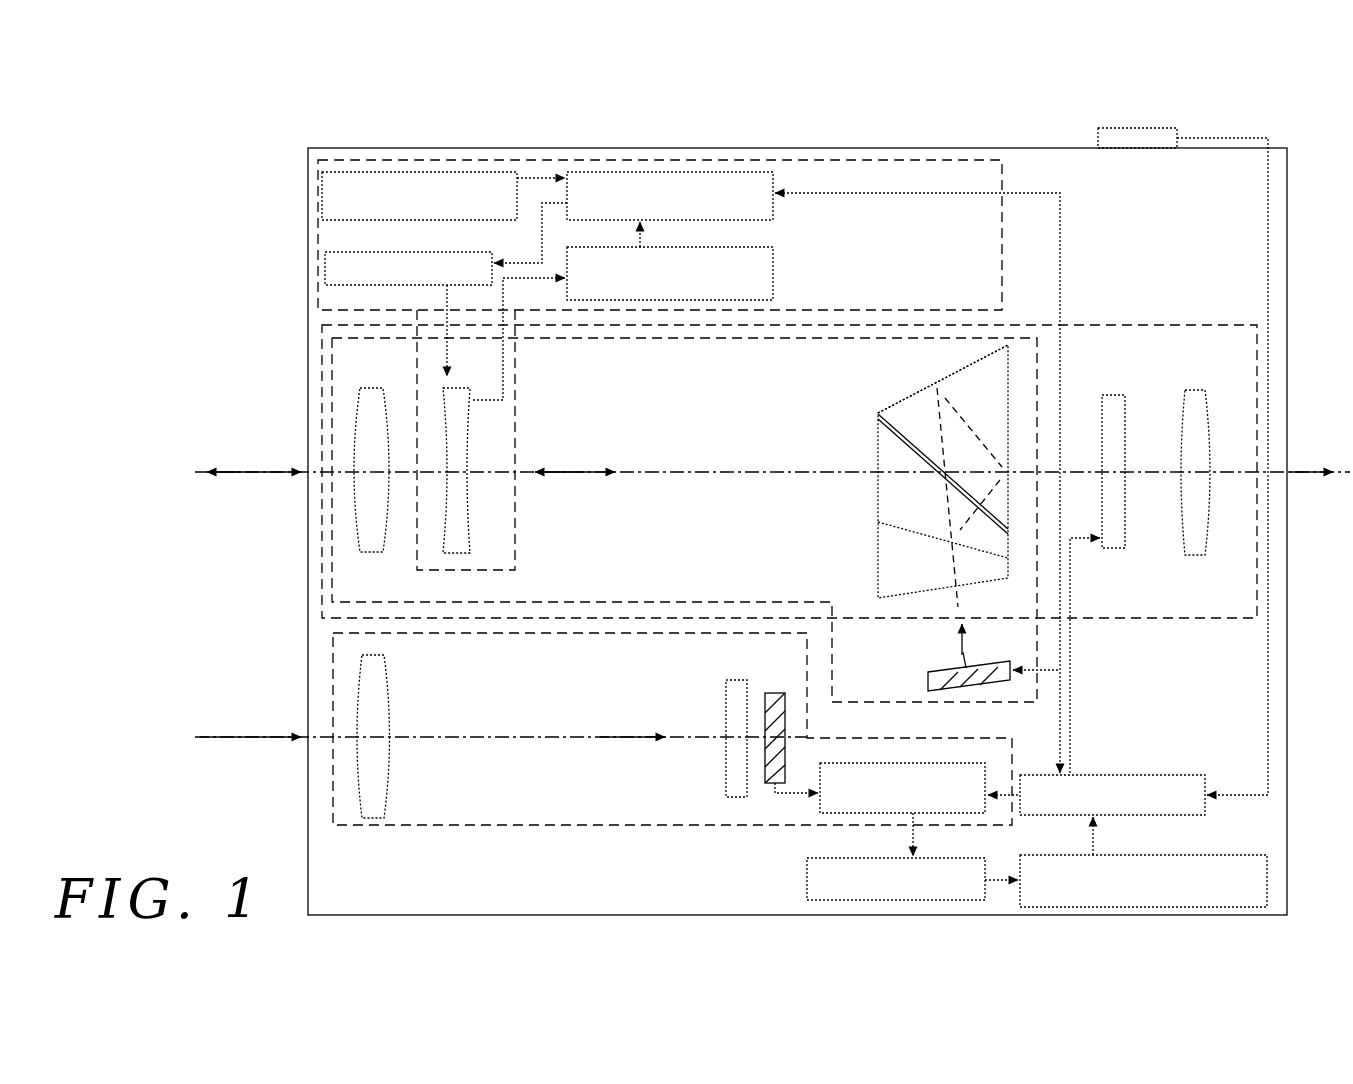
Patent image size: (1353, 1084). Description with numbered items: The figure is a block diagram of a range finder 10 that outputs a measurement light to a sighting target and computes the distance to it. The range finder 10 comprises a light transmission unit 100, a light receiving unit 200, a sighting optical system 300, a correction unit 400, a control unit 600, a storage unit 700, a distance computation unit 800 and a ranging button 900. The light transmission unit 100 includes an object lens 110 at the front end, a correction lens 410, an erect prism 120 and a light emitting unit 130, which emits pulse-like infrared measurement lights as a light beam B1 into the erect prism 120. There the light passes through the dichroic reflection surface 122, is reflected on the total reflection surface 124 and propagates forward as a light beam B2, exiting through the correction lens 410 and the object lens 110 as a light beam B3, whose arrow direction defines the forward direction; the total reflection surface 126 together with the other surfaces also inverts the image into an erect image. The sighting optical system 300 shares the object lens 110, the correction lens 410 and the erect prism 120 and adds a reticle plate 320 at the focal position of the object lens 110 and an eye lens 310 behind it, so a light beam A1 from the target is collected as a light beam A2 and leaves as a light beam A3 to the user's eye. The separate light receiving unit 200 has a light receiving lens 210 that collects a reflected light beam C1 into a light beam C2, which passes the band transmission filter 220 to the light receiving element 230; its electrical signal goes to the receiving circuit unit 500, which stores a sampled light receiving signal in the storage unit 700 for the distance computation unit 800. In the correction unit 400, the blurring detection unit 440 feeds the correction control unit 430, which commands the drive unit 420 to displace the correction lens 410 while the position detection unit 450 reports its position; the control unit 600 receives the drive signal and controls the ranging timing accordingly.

The range finder 10 is at (337, 98).
The light transmission unit 100 is at (752, 588).
The object lens 110 is at (383, 401).
The erect prism 120 is at (868, 407).
The dichroic reflection surface 122 is at (893, 523).
The total reflection surface 124 is at (893, 431).
The total reflection surface 126 is at (914, 394).
The light emitting unit 130 is at (990, 667).
The light receiving unit 200 is at (630, 809).
The light receiving lens 210 is at (384, 681).
The band transmission filter 220 is at (737, 680).
The light receiving element 230 is at (781, 692).
The sighting optical system 300 is at (1195, 602).
The eye lens 310 is at (1206, 391).
The reticle plate 320 is at (1122, 394).
The correction unit 400 is at (935, 288).
The correction lens 410 is at (470, 397).
The drive unit 420 is at (463, 251).
The correction control unit 430 is at (761, 171).
The blurring detection unit 440 is at (478, 171).
The position detection unit 450 is at (746, 250).
The receiving circuit unit 500 is at (953, 761).
The control unit 600 is at (1188, 774).
The storage unit 700 is at (943, 860).
The distance computation unit 800 is at (1240, 855).
The ranging button 900 is at (1156, 127).
The light beam A1 is at (285, 460).
The light beam A2 is at (610, 461).
The light beam A3 is at (1318, 462).
The light beam B1 is at (956, 646).
The light beam B2 is at (553, 483).
The light beam B3 is at (232, 481).
The light beam C1 is at (285, 729).
The light beam C2 is at (650, 730).